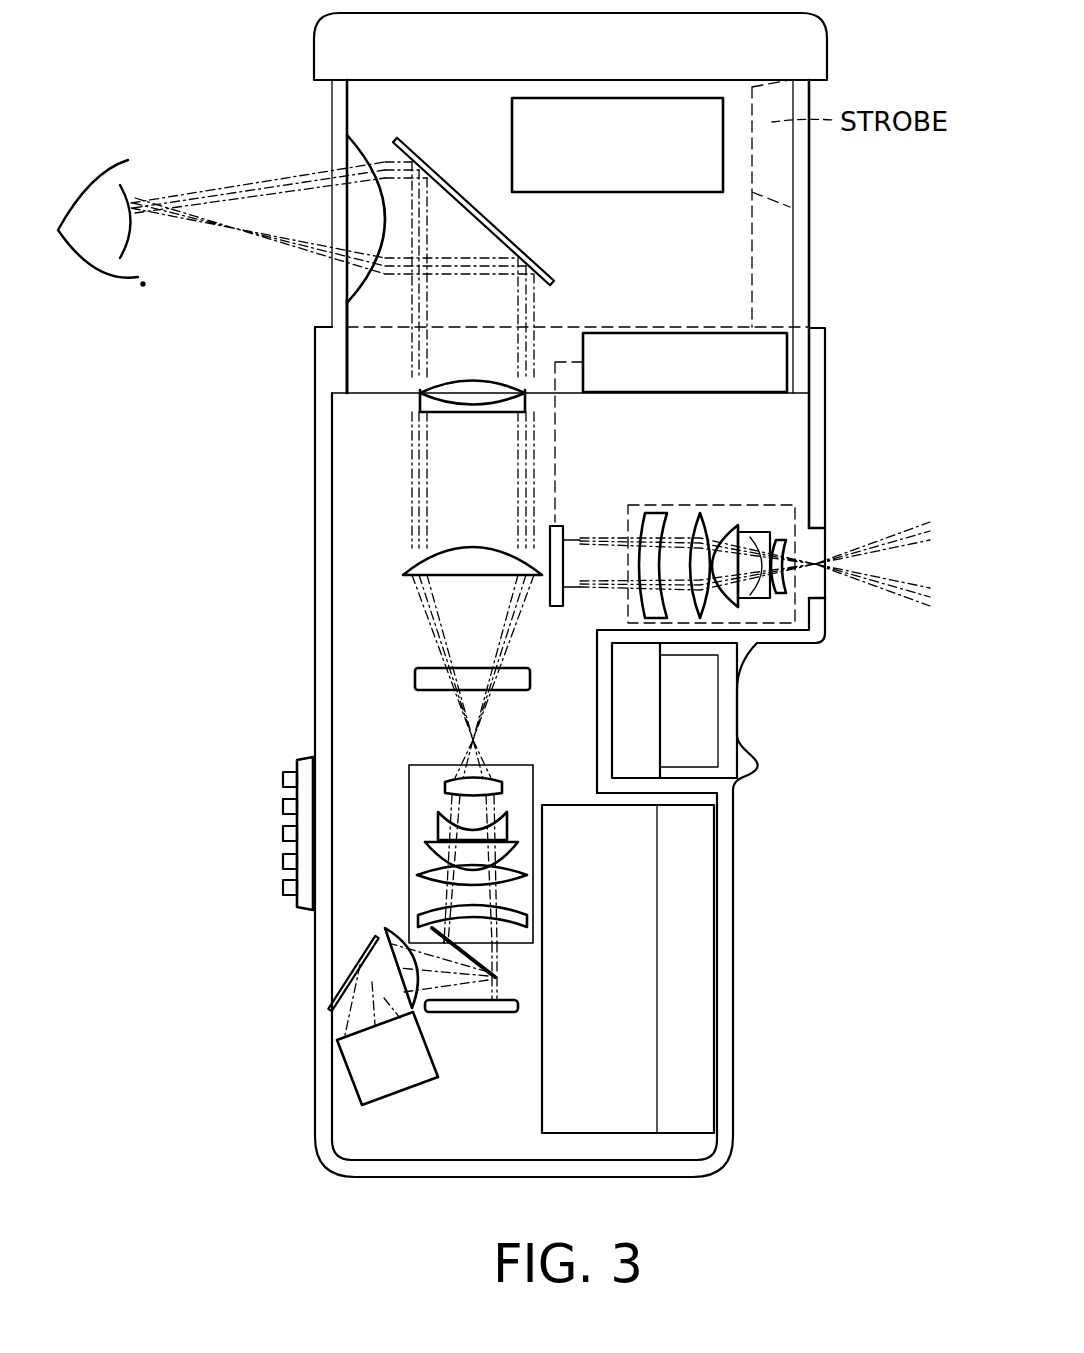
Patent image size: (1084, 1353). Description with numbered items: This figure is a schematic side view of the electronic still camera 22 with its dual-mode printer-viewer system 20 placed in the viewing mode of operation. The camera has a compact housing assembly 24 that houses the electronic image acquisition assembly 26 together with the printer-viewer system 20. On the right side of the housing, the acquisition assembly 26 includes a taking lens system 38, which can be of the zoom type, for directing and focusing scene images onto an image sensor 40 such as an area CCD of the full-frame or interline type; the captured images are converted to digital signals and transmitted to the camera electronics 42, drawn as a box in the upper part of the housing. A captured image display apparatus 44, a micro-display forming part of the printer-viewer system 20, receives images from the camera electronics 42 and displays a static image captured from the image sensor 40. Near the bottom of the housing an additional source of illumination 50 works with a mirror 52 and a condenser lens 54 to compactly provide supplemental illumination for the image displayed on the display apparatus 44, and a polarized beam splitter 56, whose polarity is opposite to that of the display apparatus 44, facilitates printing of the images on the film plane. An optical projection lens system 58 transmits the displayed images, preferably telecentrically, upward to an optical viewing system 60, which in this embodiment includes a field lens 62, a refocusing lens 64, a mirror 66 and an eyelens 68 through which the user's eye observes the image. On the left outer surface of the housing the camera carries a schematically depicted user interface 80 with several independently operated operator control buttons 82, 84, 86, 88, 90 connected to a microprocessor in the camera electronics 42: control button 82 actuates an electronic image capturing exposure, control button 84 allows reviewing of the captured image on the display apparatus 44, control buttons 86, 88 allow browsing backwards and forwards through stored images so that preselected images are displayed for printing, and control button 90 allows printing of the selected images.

The printer-viewer system 20 is at (572, 302).
The electronic still camera 22 is at (870, 291).
The housing assembly 24 is at (840, 386).
The electronic image acquisition assembly 26 is at (704, 484).
The taking lens system 38 is at (750, 505).
The image sensor 40 is at (563, 530).
The camera electronics 42 is at (683, 327).
The captured image display apparatus 44 is at (497, 1024).
The source of illumination 50 is at (382, 1082).
The mirror 52 is at (347, 977).
The condenser lens 54 is at (392, 927).
The polarized beam splitter 56 is at (482, 960).
The optical projection lens system 58 is at (535, 887).
The optical viewing system 60 is at (338, 336).
The field lens 62 is at (388, 563).
The refocusing lens 64 is at (420, 396).
The mirror 66 is at (523, 247).
The eyelens 68 is at (350, 290).
The user interface 80 is at (303, 757).
The control button 82 is at (283, 776).
The control button 84 is at (283, 805).
The control button 86 is at (283, 834).
The control button 88 is at (283, 866).
The control button 90 is at (283, 891).